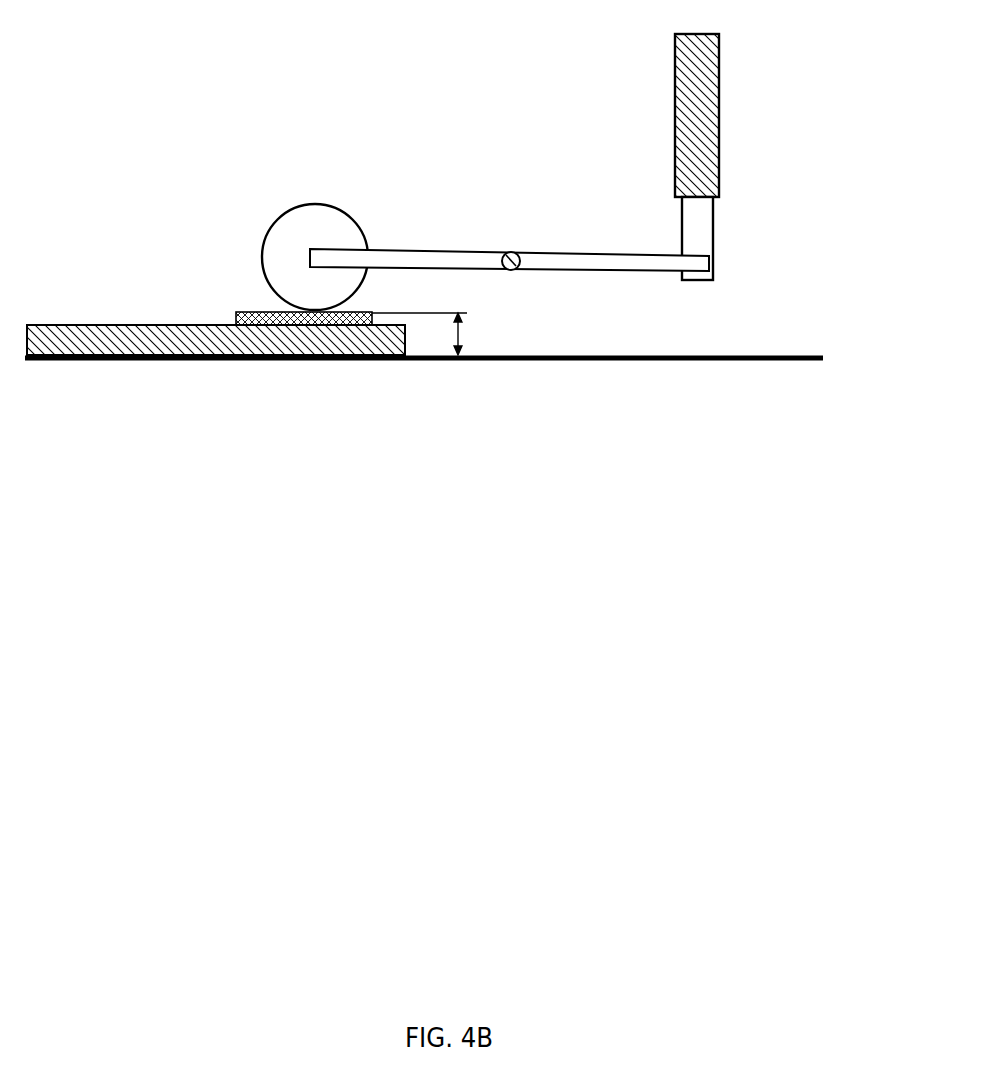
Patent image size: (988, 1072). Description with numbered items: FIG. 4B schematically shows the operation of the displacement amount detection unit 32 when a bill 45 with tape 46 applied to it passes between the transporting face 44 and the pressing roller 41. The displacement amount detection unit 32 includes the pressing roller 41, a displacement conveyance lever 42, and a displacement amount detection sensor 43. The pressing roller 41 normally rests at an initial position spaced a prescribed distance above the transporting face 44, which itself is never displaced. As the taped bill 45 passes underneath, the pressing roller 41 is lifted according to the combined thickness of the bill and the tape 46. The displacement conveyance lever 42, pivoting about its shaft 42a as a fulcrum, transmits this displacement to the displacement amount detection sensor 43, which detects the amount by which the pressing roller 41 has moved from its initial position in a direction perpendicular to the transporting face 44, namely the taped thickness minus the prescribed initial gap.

The displacement amount detection unit 32 is at (393, 90).
The pressing roller 41 is at (320, 205).
The displacement conveyance lever 42 is at (620, 253).
The shaft 42a is at (512, 252).
The displacement amount detection sensor 43 is at (720, 100).
The transporting face 44 is at (786, 355).
The bill 45 is at (90, 325).
The tape 46 is at (247, 312).